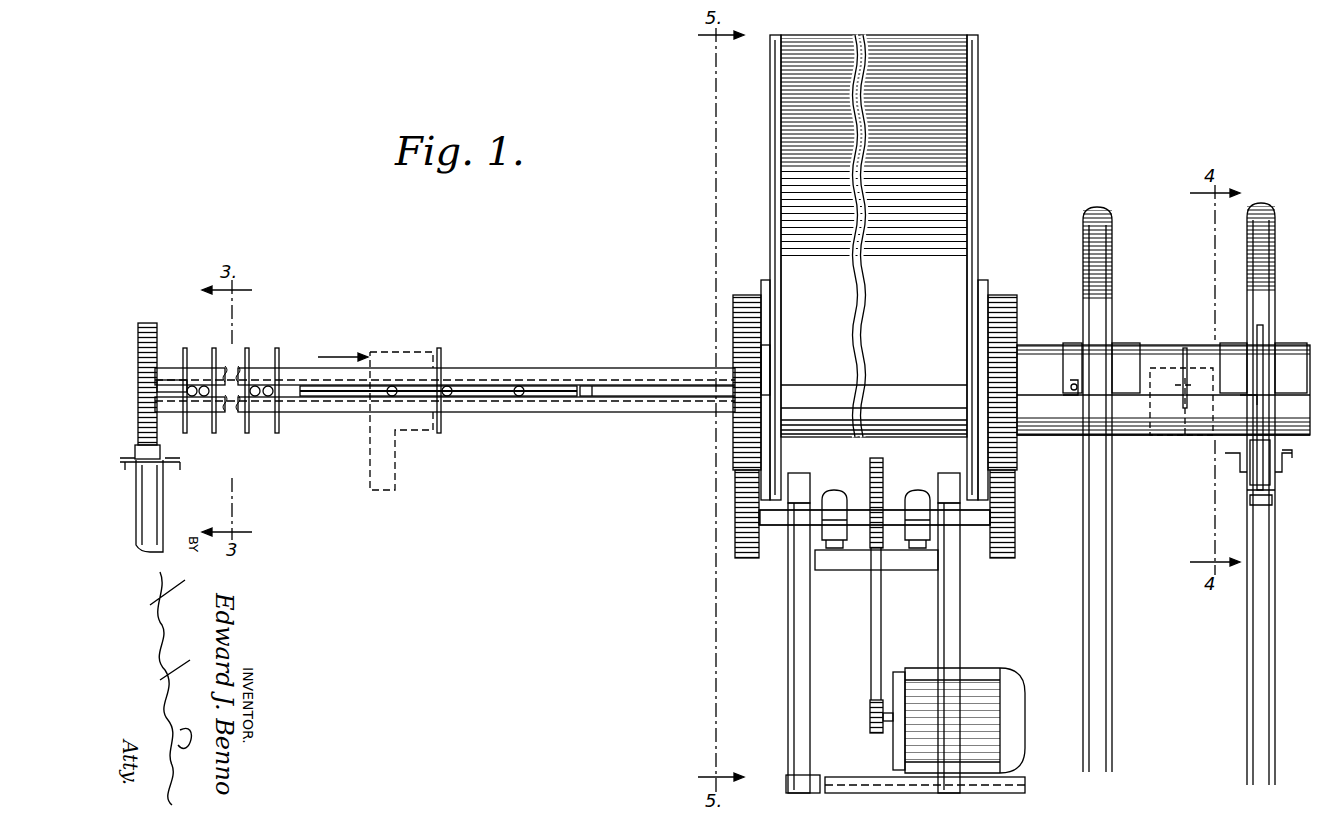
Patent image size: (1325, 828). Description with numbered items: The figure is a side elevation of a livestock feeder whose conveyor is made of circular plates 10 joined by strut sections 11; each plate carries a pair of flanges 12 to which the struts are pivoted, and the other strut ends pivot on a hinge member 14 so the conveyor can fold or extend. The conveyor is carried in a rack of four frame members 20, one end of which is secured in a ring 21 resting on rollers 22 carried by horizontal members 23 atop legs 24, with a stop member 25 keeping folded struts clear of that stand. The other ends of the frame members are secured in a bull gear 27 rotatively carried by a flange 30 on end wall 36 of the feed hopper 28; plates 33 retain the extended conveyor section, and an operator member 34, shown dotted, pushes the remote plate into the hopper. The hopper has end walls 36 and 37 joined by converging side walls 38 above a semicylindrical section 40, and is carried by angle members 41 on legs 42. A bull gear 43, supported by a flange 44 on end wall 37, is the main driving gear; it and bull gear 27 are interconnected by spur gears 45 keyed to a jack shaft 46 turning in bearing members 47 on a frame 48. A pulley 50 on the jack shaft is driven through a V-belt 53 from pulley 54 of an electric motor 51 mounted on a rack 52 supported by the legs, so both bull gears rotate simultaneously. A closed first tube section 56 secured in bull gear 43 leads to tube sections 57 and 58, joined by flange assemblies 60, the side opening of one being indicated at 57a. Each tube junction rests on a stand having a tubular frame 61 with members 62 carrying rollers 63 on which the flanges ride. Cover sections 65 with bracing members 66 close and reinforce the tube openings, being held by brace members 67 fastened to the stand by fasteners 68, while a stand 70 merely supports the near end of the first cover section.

The circular plates 10 is at (214, 348).
The strut sections 11 is at (205, 397).
The flanges 12 is at (448, 397).
The hinge member 14 is at (358, 396).
The frame members 20 is at (578, 368).
The ring 21 is at (148, 323).
The rollers 22 is at (160, 452).
The horizontal members 23 is at (126, 460).
The legs 24 is at (165, 521).
The stop member 25 is at (183, 385).
The bull gear 27 is at (733, 296).
The feed hopper 28 is at (771, 122).
The flange 30 is at (770, 278).
The plates 33 is at (636, 390).
The operator member 34 is at (397, 470).
The end wall 36 is at (772, 182).
The end wall 37 is at (977, 125).
The side walls 38 is at (895, 45).
The semicylindrical section 40 is at (878, 392).
The angle members 41 is at (797, 473).
The legs 42 is at (788, 655).
The bull gear 43 is at (1003, 295).
The flange 44 is at (985, 268).
The spur gears 45 is at (748, 558).
The jack shaft 46 is at (900, 508).
The bearing members 47 is at (833, 500).
The frame 48 is at (857, 570).
The pulley 50 is at (883, 462).
The electric motor 51 is at (992, 668).
The rack 52 is at (850, 777).
The V-belt 53 is at (870, 660).
The pulley 54 is at (869, 703).
The first tube section 56 is at (1055, 345).
The tube section 57 is at (1170, 435).
The opening 57a is at (1137, 350).
The tube section 58 is at (1292, 455).
The flange assembly 60 is at (1263, 330).
The tubular frame 61 is at (1262, 207).
The members 62 is at (1226, 458).
The rollers 63 is at (1250, 492).
The cover sections 65 is at (1070, 343).
The bracing members 66 is at (1120, 435).
The brace members 67 is at (1050, 396).
The fasteners 68 is at (1073, 396).
The stand 70 is at (1098, 207).